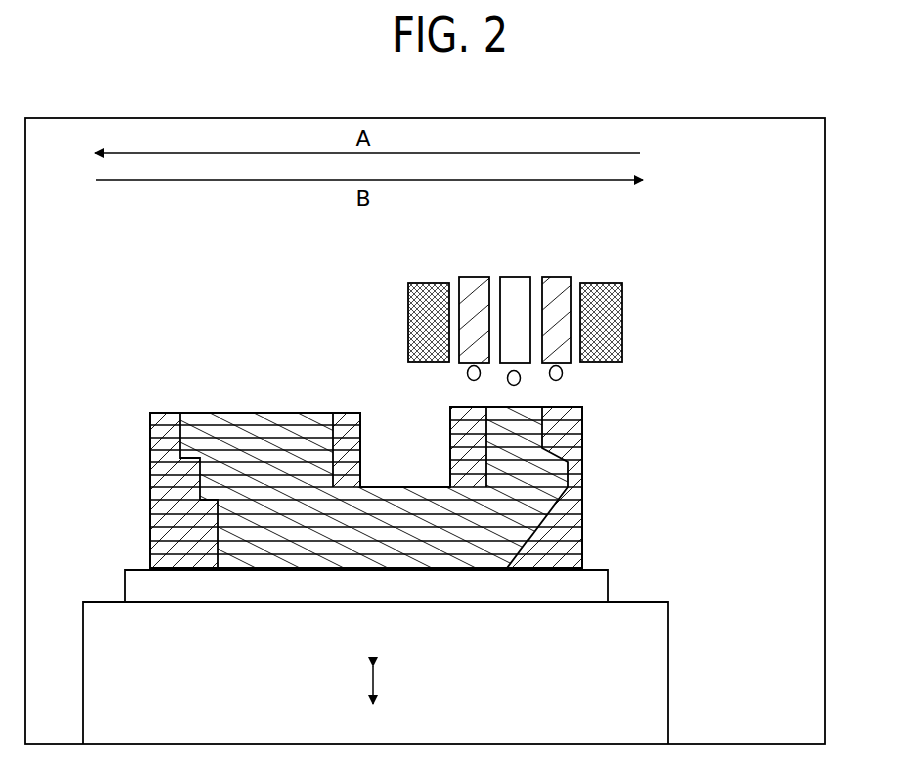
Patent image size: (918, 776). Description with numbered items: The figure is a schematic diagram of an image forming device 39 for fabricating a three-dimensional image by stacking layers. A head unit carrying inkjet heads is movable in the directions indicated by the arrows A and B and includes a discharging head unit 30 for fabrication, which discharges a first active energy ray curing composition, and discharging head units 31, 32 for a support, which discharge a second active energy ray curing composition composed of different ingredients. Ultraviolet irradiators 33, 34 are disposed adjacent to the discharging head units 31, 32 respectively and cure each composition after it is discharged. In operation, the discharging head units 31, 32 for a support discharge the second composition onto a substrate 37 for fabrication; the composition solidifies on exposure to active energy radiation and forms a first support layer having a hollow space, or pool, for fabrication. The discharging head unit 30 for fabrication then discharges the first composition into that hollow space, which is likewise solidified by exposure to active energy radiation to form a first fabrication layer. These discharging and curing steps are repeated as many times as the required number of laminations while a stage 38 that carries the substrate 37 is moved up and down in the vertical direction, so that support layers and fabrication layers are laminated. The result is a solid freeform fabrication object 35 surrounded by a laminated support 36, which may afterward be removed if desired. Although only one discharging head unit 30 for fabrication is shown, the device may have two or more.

The discharging head unit for fabrication 30 is at (517, 277).
The discharging head unit for a support 31 is at (477, 277).
The discharging head unit for a support 32 is at (559, 277).
The ultraviolet irradiator 33 is at (408, 302).
The ultraviolet irradiator 34 is at (622, 300).
The solid freeform fabrication object 35 is at (271, 402).
The laminated support 36 is at (590, 434).
The substrate for fabrication 37 is at (610, 583).
The stage 38 is at (669, 613).
The image forming device 39 is at (826, 143).